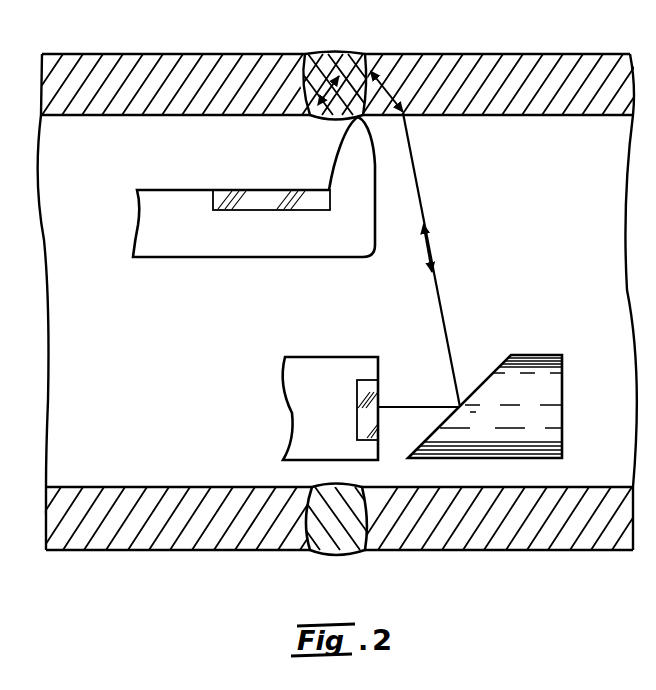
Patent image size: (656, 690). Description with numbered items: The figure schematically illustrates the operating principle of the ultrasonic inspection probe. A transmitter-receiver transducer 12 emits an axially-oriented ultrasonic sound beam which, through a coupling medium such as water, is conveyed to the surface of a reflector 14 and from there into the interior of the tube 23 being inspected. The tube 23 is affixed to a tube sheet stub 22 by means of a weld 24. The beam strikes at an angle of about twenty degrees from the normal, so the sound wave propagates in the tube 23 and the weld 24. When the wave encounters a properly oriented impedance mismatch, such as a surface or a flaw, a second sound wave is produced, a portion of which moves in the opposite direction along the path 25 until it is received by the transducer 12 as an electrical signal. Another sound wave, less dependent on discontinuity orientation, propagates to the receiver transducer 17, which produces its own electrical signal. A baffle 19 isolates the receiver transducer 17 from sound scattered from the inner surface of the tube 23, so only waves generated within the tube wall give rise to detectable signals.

The transmitter-receiver transducer 12 is at (364, 380).
The reflector 14 is at (518, 354).
The receiver transducer 17 is at (267, 190).
The baffle 19 is at (362, 119).
The tube sheet stub 22 is at (162, 53).
The tube 23 is at (431, 53).
The weld 24 is at (318, 52).
The path 25 is at (421, 209).